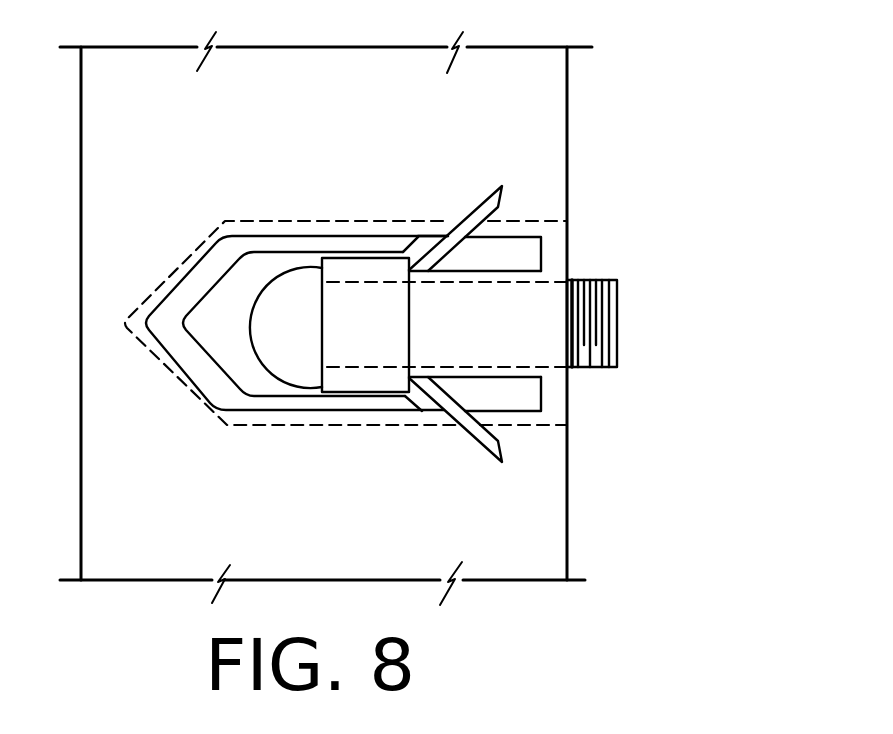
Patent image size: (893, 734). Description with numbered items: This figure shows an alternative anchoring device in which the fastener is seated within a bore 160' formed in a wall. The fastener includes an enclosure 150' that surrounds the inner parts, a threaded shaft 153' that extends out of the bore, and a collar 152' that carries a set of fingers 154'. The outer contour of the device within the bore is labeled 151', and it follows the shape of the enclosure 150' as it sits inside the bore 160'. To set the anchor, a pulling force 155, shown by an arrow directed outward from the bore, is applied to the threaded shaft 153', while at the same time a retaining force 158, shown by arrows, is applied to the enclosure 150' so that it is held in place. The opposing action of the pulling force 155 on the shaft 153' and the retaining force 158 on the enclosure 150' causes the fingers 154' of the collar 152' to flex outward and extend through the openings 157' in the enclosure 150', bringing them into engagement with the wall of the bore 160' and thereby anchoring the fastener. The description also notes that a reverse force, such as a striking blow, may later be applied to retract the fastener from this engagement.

The enclosure 150' is at (301, 365).
The outer spring clip leg 151' is at (272, 318).
The collar 152' is at (329, 276).
The threaded shaft 153' is at (483, 392).
The fingers 154' is at (485, 297).
The pulling force 155 is at (635, 323).
The openings 157' is at (445, 192).
The retaining force 158 is at (556, 393).
The bore 160' is at (387, 351).